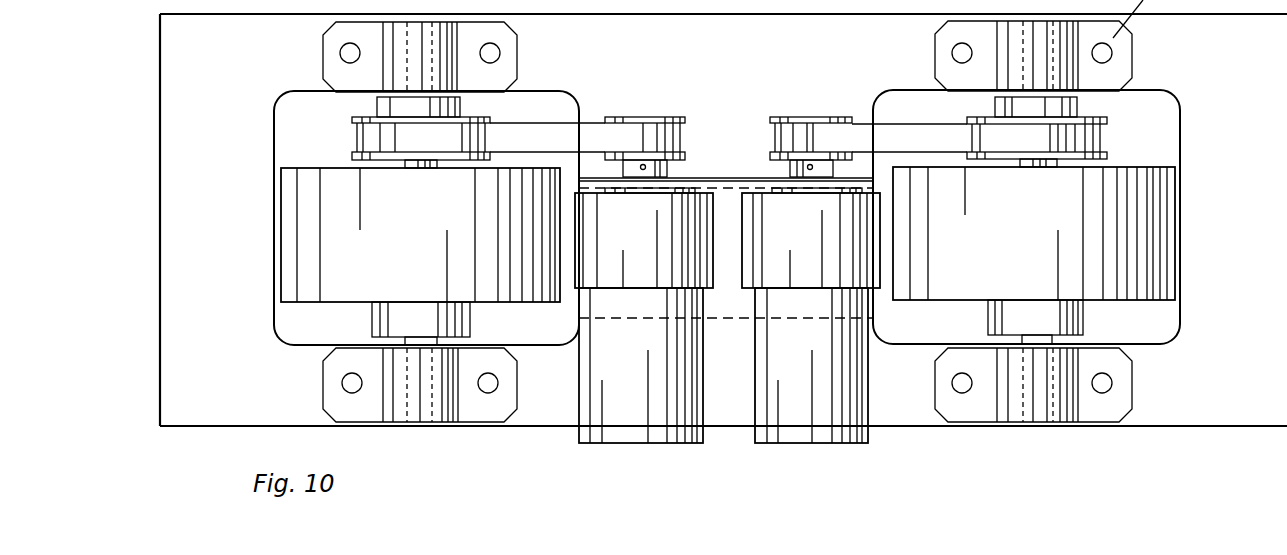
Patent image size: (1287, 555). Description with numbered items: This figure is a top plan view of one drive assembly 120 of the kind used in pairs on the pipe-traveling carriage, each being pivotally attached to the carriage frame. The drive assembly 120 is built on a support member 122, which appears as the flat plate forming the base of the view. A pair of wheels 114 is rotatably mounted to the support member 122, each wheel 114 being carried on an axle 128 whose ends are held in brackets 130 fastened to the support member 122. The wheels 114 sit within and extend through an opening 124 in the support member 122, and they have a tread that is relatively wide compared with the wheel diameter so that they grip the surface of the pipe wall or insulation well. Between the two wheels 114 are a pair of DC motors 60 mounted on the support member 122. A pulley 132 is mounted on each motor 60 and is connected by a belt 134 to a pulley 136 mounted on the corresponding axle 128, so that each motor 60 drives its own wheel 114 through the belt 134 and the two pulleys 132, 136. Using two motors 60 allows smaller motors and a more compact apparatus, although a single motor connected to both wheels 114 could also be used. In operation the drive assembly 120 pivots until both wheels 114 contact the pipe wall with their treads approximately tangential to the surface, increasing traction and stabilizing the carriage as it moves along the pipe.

The DC motor 60 is at (757, 437).
The wheel 114 is at (315, 228).
The drive assembly 120 is at (148, 390).
The support member 122 is at (227, 407).
The opening 124 is at (290, 334).
The axle 128 is at (433, 430).
The bracket 130 is at (505, 57).
The pulley 132 is at (687, 120).
The belt 134 is at (553, 130).
The pulley 136 is at (353, 123).